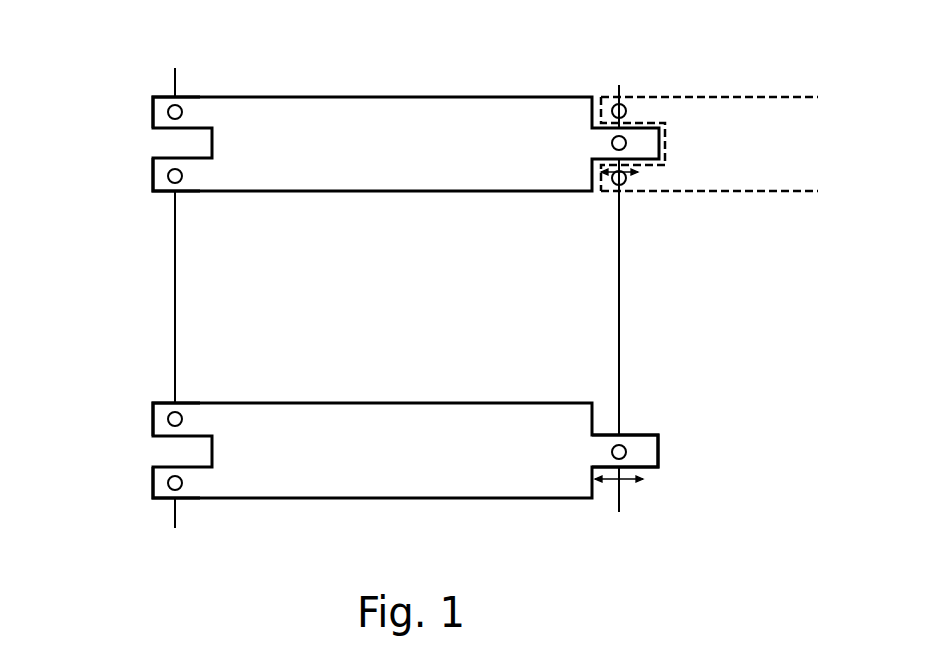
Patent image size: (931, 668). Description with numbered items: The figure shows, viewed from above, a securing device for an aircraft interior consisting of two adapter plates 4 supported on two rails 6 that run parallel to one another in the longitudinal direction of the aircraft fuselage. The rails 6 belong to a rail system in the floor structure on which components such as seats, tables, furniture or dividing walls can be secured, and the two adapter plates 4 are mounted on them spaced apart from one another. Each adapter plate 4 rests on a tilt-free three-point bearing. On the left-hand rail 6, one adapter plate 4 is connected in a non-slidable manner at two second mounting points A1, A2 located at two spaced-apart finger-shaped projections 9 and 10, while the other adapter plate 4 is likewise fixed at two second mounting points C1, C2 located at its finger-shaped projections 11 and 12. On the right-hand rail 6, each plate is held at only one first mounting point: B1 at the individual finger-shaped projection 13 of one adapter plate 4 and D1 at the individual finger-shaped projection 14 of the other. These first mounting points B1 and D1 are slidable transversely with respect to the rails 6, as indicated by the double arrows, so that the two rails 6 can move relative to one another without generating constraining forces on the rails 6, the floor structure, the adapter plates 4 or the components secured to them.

The adapter plate 4 is at (430, 105).
The rail 6 is at (178, 233).
The finger-shaped projection 9 is at (157, 102).
The finger-shaped projection 10 is at (158, 185).
The finger-shaped projection 11 is at (157, 415).
The finger-shaped projection 12 is at (157, 493).
The finger-shaped projection 13 is at (652, 133).
The finger-shaped projection 14 is at (660, 458).
The second mounting point A1 is at (170, 112).
The second mounting point A2 is at (170, 176).
The first mounting point B1 is at (622, 143).
The second mounting point C1 is at (170, 419).
The second mounting point C2 is at (170, 483).
The first mounting point D1 is at (622, 452).